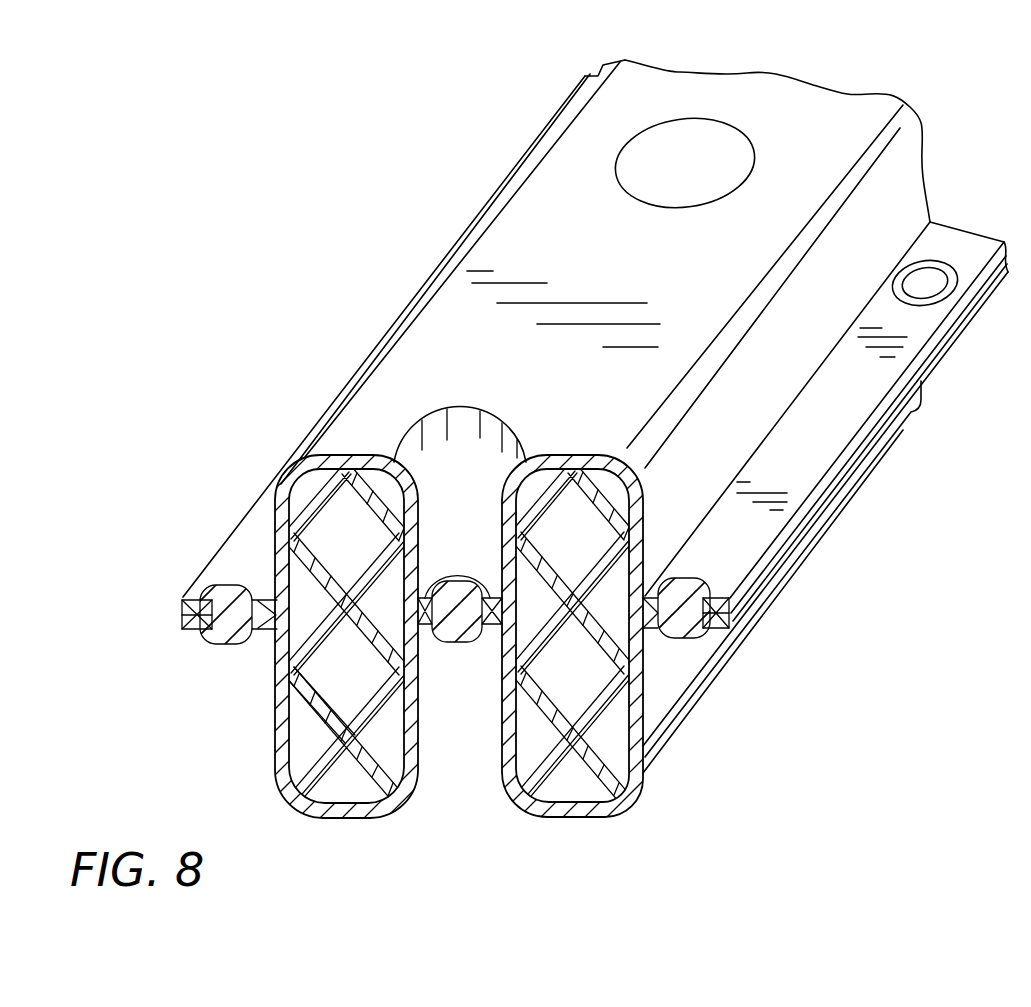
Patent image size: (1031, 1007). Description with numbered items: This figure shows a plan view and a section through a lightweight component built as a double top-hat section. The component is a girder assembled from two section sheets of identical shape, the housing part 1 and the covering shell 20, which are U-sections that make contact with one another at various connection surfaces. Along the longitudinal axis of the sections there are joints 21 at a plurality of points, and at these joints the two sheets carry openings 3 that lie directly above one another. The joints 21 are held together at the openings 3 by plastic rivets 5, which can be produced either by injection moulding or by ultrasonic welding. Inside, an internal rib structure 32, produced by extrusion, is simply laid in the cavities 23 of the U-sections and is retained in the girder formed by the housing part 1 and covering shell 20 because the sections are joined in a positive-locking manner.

The housing part 1 is at (290, 800).
The openings 3 is at (705, 630).
The plastic rivets 5 is at (203, 641).
The covering shell 20 is at (643, 508).
The joints 21 is at (753, 157).
The cavities 23 is at (318, 548).
The internal rib structure 32 is at (308, 708).